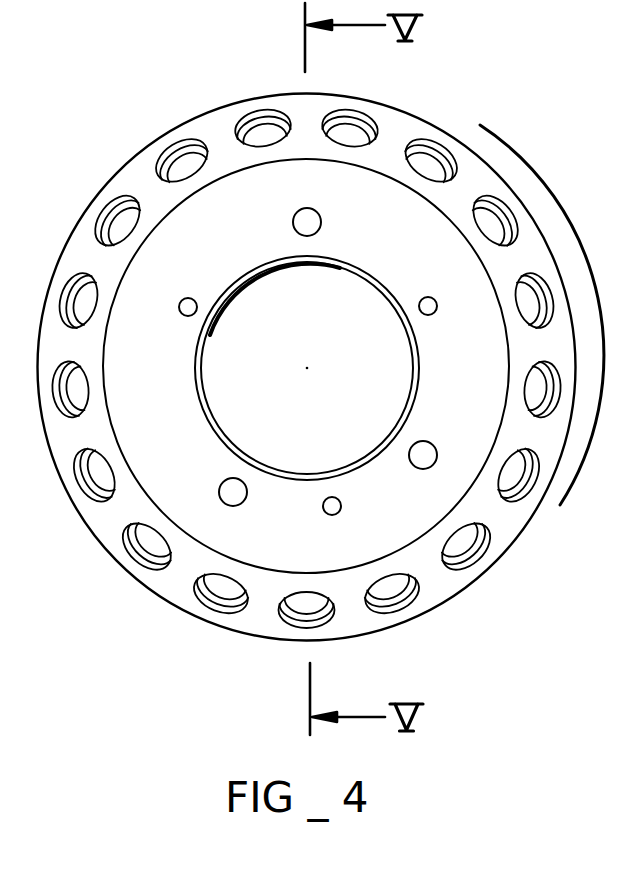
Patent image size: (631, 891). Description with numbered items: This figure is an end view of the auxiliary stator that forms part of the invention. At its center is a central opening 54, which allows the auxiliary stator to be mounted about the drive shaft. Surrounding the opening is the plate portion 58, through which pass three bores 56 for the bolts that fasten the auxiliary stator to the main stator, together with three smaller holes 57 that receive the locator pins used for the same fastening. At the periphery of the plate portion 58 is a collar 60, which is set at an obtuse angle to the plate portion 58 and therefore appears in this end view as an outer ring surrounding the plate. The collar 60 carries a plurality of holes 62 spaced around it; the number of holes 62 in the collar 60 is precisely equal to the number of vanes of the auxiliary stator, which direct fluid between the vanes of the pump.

The central opening 54 is at (337, 360).
The bores 56 is at (296, 214).
The holes 57 is at (186, 300).
The plate portion 58 is at (163, 410).
The collar 60 is at (480, 180).
The holes 62 is at (535, 300).